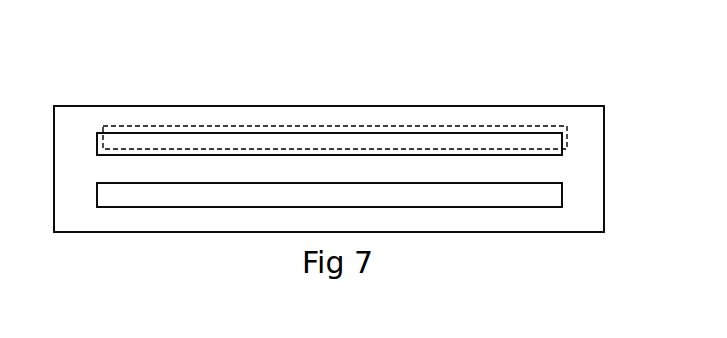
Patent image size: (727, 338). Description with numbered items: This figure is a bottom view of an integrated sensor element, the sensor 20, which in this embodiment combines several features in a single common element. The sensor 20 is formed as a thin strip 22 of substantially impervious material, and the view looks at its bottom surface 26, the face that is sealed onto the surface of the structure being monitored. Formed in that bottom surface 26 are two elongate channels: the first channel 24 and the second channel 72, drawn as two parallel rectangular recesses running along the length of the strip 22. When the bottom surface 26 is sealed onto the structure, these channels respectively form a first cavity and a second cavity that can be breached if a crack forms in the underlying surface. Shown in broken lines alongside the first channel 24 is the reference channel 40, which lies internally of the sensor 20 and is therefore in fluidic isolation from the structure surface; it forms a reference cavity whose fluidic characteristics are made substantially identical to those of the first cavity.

The sensor 20 is at (562, 72).
The strip 22 is at (604, 135).
The first channel 24 is at (449, 131).
The bottom surface 26 is at (583, 180).
The reference channel 40 is at (402, 125).
The second channel 72 is at (525, 207).